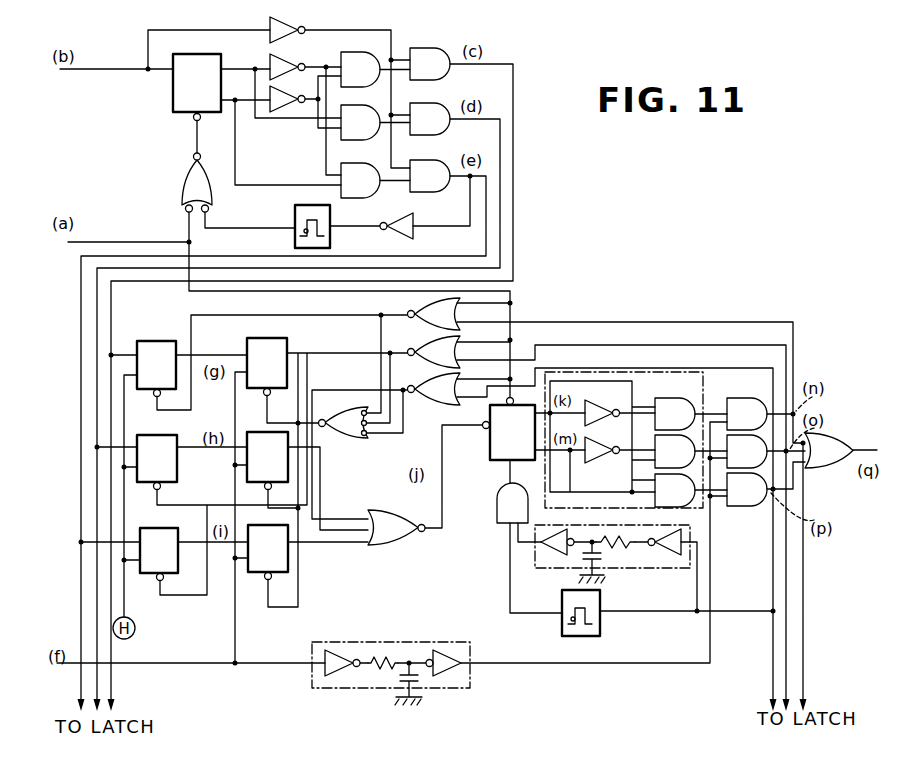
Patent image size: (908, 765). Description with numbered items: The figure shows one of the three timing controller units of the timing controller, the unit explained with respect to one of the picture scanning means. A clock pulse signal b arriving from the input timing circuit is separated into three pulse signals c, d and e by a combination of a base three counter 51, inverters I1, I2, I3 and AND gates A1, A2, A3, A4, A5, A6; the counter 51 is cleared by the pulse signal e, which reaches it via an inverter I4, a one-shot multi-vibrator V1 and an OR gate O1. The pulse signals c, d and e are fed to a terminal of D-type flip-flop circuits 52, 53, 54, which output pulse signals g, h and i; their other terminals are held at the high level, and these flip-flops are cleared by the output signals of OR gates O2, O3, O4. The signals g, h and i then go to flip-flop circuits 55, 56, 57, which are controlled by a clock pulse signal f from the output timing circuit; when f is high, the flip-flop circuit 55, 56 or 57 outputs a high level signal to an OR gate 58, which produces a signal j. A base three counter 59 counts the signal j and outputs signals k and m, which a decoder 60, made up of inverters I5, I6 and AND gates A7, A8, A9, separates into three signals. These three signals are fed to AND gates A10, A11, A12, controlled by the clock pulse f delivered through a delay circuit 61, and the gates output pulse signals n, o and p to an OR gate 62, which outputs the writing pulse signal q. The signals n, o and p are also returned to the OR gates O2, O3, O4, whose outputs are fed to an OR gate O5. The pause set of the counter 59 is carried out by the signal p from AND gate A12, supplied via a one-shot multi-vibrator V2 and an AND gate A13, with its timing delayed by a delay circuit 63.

The base 3 counter 51 is at (173, 96).
The D-type flip-flop circuit 52 is at (158, 341).
The D-type flip-flop circuit 53 is at (152, 435).
The D-type flip-flop circuit 54 is at (150, 528).
The flip-flop circuit 55 is at (287, 349).
The flip-flop circuit 56 is at (266, 484).
The flip-flop circuit 57 is at (266, 580).
The OR gate 58 is at (392, 513).
The base 3 counter 59 is at (490, 457).
The decoder 60 is at (633, 374).
The delay circuit 61 is at (416, 642).
The OR gate 62 is at (829, 470).
The delay circuit 63 is at (627, 568).
The OR gate O1 is at (183, 188).
The OR gate O2 is at (434, 314).
The OR gate O3 is at (434, 352).
The OR gate O4 is at (434, 389).
The OR gate O5 is at (344, 422).
The AND gate A1 is at (360, 69).
The AND gate A2 is at (360, 122).
The AND gate A3 is at (360, 180).
The AND gate A4 is at (430, 64).
The AND gate A5 is at (430, 119).
The AND gate A6 is at (430, 176).
The AND gate A7 is at (675, 414).
The AND gate A8 is at (675, 451).
The AND gate A9 is at (675, 490).
The AND gate A10 is at (747, 414).
The AND gate A11 is at (747, 451).
The AND gate A12 is at (747, 489).
The AND gate A13 is at (512, 503).
The inverter I1 is at (271, 38).
The inverter I2 is at (289, 60).
The inverter I3 is at (280, 88).
The inverter I4 is at (399, 214).
The inverter I5 is at (590, 412).
The inverter I6 is at (590, 449).
The one-shot multi-vibrator V1 is at (295, 214).
The one-shot multi-vibrator V2 is at (600, 626).